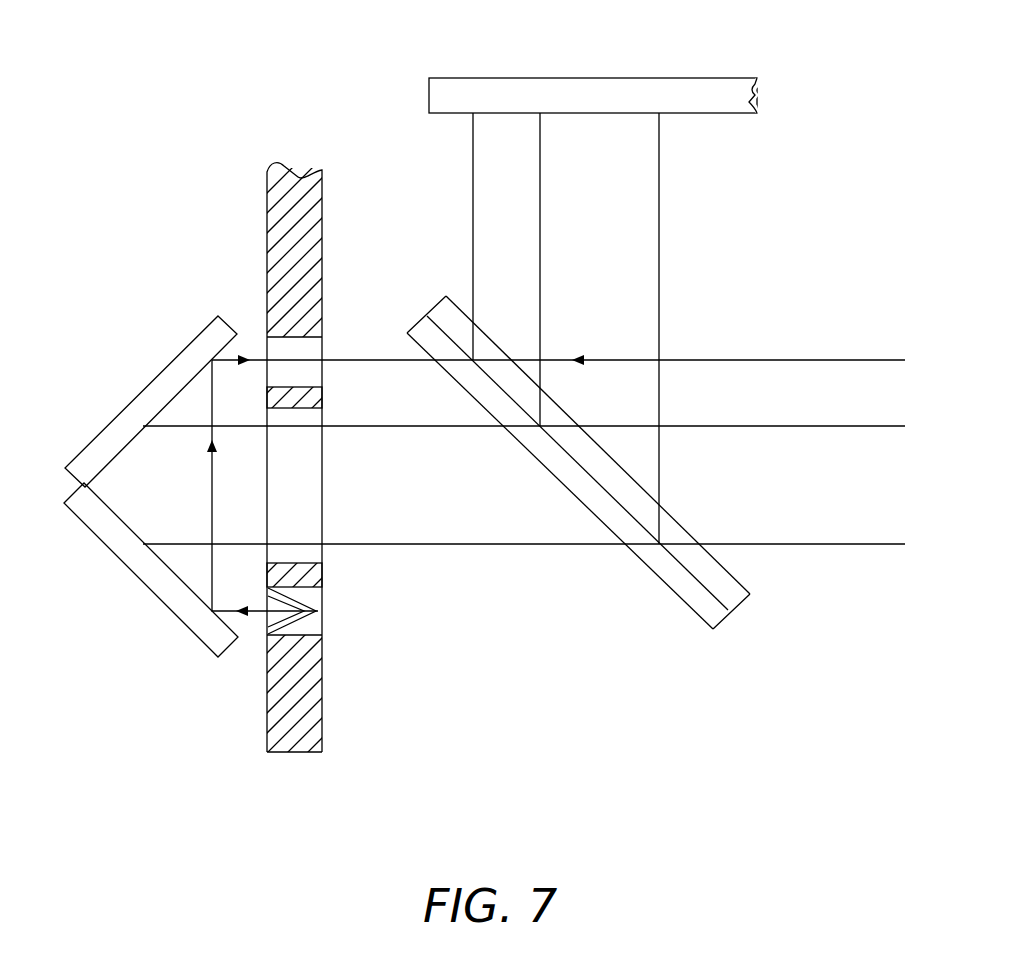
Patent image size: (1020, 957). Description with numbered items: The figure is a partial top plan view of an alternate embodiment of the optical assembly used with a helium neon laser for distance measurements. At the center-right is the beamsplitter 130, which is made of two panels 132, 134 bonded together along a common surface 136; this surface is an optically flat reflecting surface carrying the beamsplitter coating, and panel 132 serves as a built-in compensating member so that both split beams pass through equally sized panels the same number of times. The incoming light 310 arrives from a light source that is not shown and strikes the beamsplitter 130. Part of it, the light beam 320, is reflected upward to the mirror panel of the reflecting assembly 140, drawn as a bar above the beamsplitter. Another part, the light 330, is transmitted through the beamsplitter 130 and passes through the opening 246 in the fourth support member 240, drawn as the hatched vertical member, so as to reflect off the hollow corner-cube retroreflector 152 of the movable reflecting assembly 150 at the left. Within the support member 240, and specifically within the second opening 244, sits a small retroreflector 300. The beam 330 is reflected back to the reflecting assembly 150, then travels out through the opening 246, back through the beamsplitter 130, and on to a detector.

The beamsplitter 130 is at (616, 478).
The panel 132 is at (719, 575).
The panel 134 is at (704, 612).
The common surface 136 is at (666, 558).
The reflecting assembly 140 is at (733, 68).
The movable reflecting assembly 150 is at (77, 524).
The hollow corner-cube retroreflector 152 is at (133, 408).
The fourth support member 240 is at (304, 518).
The opening 244 is at (334, 629).
The opening 246 is at (334, 381).
The small retroreflector 300 is at (318, 596).
The light 310 is at (757, 358).
The light beam 320 is at (473, 213).
The light 330 is at (212, 407).